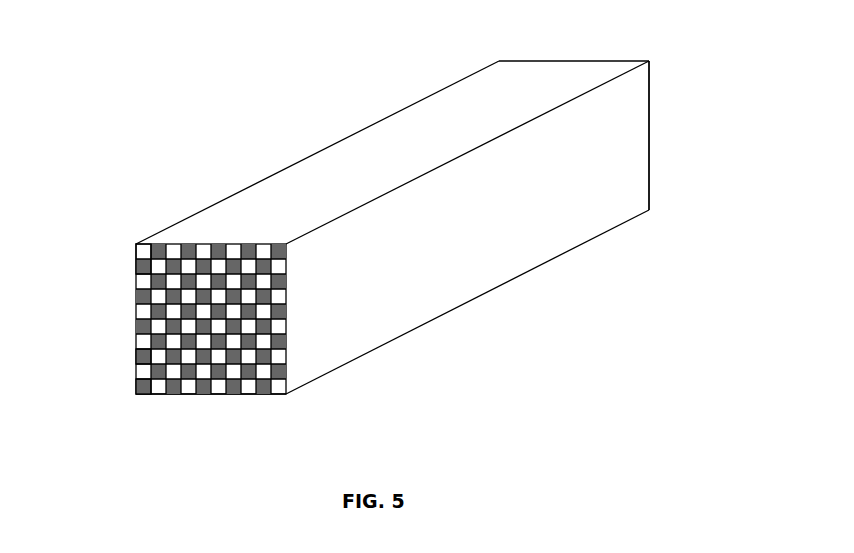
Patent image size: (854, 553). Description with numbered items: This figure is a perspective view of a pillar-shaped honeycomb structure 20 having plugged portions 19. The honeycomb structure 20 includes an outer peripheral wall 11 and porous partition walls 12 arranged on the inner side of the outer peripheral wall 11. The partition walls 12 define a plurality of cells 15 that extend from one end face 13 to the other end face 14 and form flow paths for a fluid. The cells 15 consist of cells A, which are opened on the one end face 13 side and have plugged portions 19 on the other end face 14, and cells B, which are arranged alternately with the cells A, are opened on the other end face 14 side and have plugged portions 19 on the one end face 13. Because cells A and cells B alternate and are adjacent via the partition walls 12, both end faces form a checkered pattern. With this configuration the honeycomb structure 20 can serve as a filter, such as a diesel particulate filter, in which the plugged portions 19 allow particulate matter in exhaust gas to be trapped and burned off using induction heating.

The honeycomb structure 20 is at (382, 242).
The outer peripheral wall 11 is at (493, 275).
The partition wall 12 is at (139, 357).
The one end face 13 is at (288, 385).
The other end face 14 is at (649, 202).
The cell 15 is at (139, 272).
The plugged portion 19 is at (139, 387).